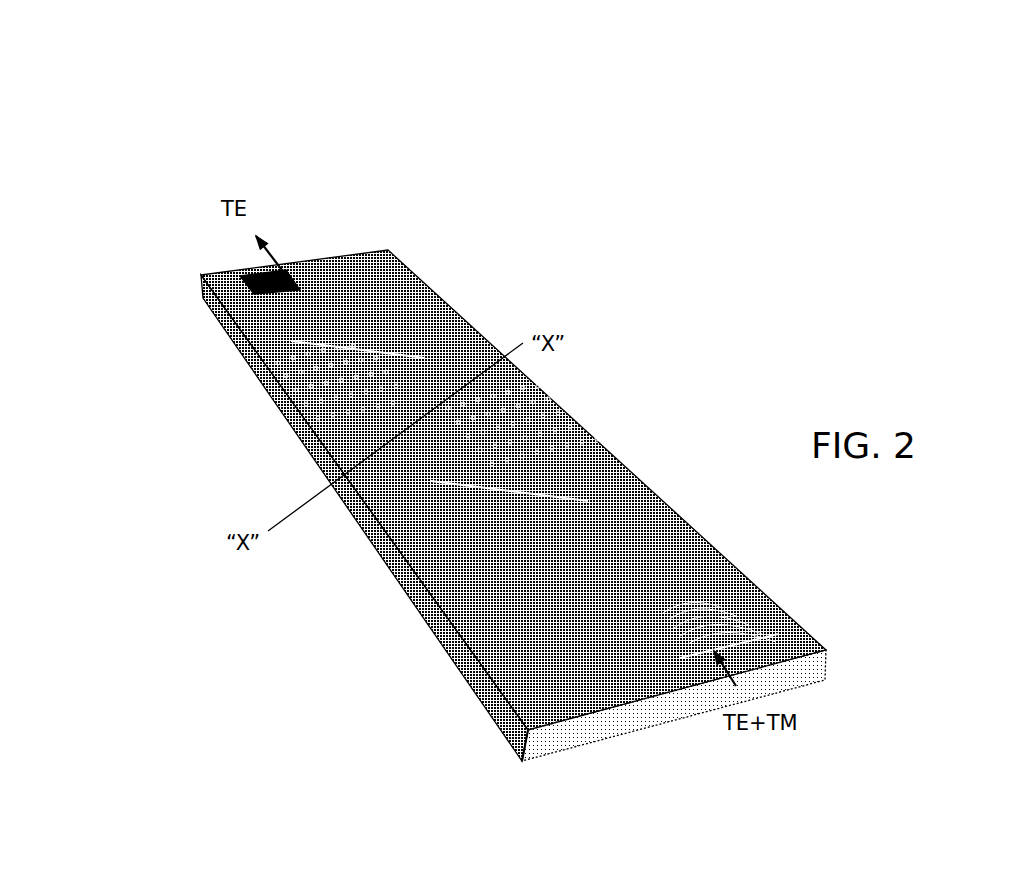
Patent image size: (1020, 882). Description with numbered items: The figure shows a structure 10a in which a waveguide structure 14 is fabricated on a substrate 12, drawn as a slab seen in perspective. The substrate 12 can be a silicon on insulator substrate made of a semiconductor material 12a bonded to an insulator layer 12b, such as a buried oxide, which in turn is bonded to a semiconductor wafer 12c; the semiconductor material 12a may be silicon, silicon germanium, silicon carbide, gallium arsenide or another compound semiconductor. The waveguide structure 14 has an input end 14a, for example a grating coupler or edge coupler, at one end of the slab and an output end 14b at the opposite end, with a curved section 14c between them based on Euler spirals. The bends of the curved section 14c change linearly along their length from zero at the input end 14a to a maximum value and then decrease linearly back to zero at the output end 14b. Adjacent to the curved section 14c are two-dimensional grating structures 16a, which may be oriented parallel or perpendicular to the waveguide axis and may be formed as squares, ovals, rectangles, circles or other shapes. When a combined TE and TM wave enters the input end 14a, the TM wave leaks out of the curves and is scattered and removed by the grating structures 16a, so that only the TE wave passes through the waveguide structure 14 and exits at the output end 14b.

The structure 10a is at (117, 137).
The substrate 12 is at (833, 632).
The semiconductor material 12a is at (420, 583).
The insulator layer 12b is at (522, 722).
The semiconductor wafer 12c is at (620, 715).
The waveguide structure 14 is at (392, 565).
The input end 14a is at (743, 613).
The output end 14b is at (290, 265).
The curved section 14c is at (430, 368).
The grating structures 16a is at (298, 417).